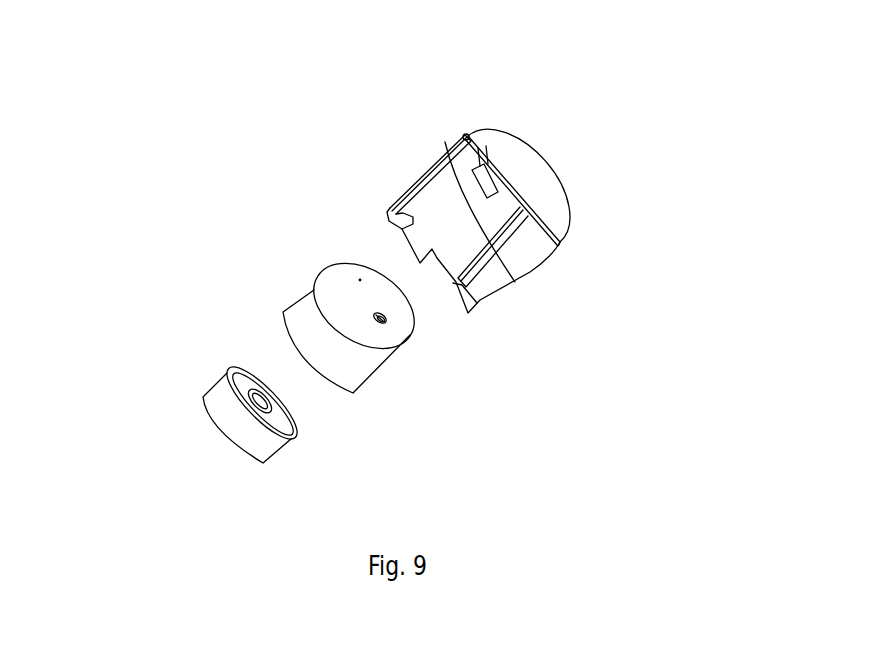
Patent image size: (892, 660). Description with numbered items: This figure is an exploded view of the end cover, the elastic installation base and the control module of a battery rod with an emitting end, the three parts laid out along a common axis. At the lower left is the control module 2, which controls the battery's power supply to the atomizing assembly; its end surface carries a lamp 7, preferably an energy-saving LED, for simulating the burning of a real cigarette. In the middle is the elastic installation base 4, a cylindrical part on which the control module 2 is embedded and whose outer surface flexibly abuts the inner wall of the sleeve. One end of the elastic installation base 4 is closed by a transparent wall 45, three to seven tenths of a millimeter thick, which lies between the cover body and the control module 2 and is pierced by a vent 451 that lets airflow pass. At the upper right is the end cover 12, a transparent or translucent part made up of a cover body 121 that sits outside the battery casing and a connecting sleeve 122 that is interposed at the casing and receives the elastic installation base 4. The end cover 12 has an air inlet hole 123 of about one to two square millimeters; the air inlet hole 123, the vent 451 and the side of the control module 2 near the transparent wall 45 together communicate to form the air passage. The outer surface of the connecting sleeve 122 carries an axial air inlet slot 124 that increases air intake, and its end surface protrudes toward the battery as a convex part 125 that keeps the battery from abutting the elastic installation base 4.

The control module 2 is at (199, 389).
The lamp 7 is at (247, 389).
The elastic installation base 4 is at (294, 288).
The transparent wall 45 is at (394, 305).
The vent 451 is at (402, 336).
The end cover 12 is at (504, 164).
The cover body 121 is at (544, 185).
The connecting sleeve 122 is at (531, 262).
The air inlet hole 123 is at (483, 163).
The air inlet slot 124 is at (432, 150).
The convex part 125 is at (392, 236).